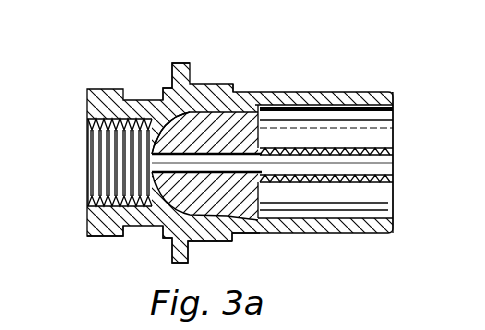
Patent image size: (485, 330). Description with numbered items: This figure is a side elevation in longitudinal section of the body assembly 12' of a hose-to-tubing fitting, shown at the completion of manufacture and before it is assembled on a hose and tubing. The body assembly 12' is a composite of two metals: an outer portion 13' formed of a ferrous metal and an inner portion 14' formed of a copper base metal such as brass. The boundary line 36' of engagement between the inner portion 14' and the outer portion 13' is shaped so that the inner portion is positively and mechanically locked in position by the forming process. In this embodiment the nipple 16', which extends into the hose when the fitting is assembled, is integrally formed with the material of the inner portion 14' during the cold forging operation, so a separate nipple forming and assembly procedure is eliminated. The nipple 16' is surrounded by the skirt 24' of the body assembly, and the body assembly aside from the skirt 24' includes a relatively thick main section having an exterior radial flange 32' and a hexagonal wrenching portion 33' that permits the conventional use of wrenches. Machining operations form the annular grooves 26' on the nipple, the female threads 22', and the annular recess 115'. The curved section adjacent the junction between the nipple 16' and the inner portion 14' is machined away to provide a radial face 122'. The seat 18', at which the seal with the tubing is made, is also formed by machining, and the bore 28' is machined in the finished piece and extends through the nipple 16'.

The body assembly 12' is at (240, 170).
The outer portion 13' is at (229, 77).
The inner portion 14' is at (231, 143).
The nipple 16' is at (351, 165).
The seat 18' is at (272, 180).
The female threads 22' is at (96, 162).
The skirt 24' is at (324, 145).
The annular grooves 26' is at (348, 176).
The bore 28' is at (326, 132).
The exterior radial flange 32' is at (149, 71).
The hexagonal wrenching portion 33' is at (203, 250).
The boundary line 36' is at (181, 95).
The annular recess 115' is at (111, 249).
The radial face 122' is at (290, 245).